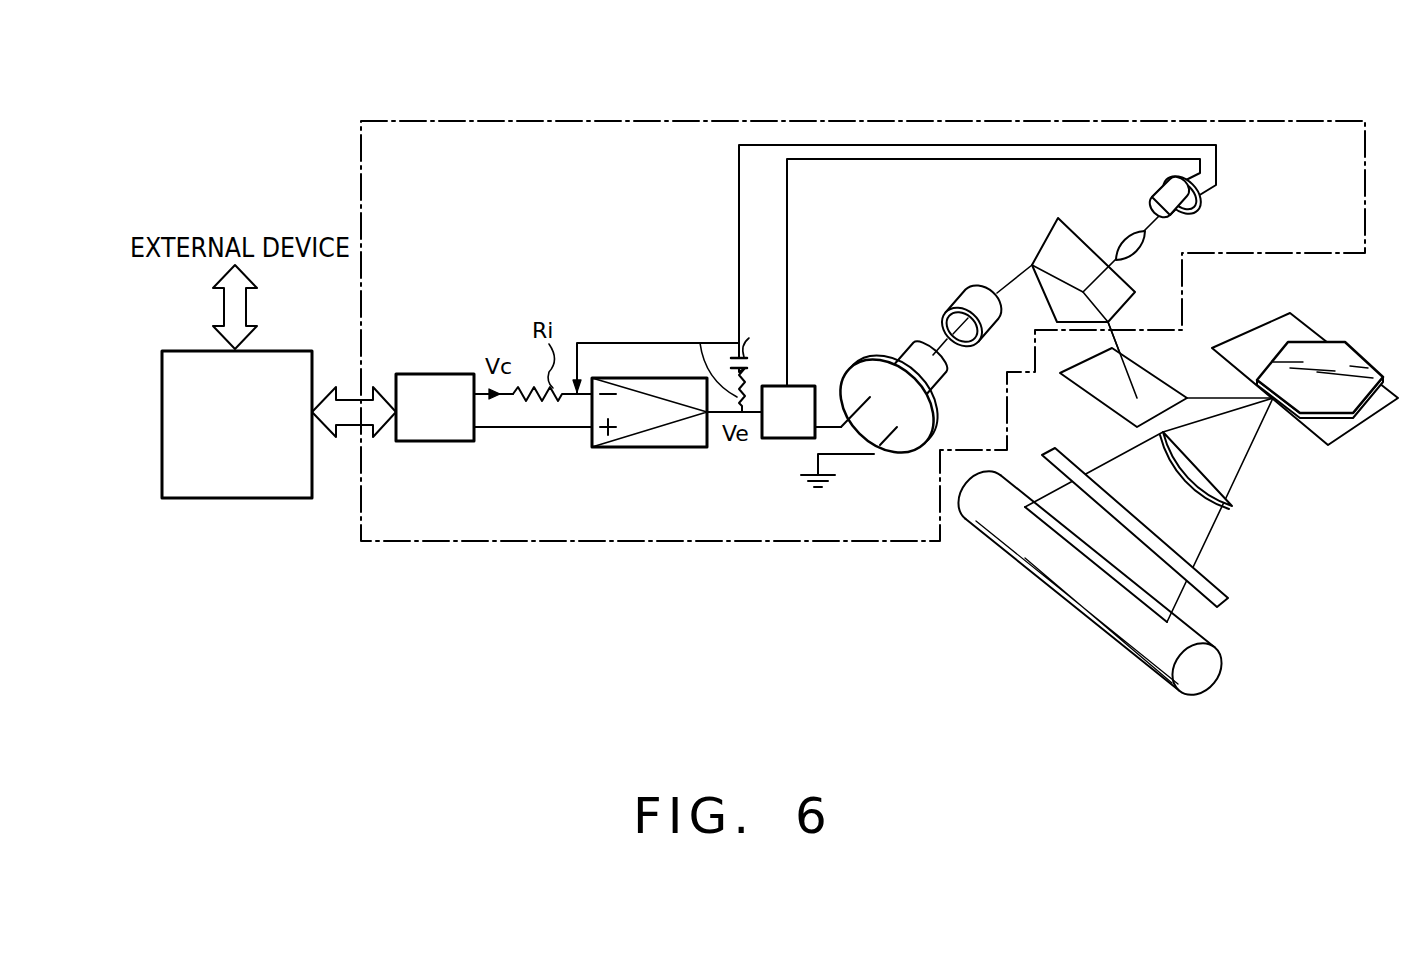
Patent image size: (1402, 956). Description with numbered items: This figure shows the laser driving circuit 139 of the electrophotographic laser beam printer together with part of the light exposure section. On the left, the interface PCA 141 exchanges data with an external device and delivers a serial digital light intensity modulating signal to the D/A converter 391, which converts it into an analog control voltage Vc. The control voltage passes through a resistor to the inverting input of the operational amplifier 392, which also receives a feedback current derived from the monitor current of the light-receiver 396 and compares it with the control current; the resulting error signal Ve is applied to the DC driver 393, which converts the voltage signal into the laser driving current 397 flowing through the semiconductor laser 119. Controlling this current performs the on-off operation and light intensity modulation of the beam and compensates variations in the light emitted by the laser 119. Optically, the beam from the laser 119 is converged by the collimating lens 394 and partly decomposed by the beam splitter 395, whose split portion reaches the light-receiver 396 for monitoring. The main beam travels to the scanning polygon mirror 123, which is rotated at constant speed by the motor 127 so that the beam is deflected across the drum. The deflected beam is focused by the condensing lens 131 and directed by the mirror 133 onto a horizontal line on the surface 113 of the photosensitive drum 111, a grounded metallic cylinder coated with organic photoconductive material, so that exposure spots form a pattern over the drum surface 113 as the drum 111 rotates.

The laser driving circuit 139 is at (545, 121).
The interface PCA 141 is at (232, 500).
The D/A converter 391 is at (428, 441).
The operational amplifier 392 is at (647, 447).
The DC driver 393 is at (777, 438).
The laser driving current 397 is at (833, 428).
The semiconductor laser 119 is at (917, 440).
The collimating lens 394 is at (943, 313).
The beam splitter 395 is at (1032, 265).
The light-receiver 396 is at (1192, 216).
The motor 127 is at (1243, 337).
The scanning mirror (polygon mirror) 123 is at (1338, 404).
The condensing lens 131 is at (1240, 495).
The mirror 133 is at (1203, 572).
The drum surface 113 is at (1073, 603).
The photosensitive drum 111 is at (1173, 695).